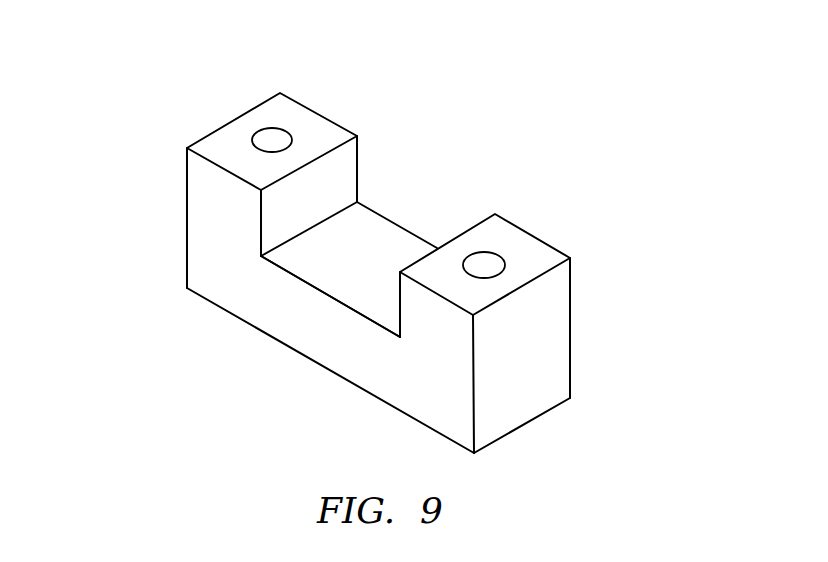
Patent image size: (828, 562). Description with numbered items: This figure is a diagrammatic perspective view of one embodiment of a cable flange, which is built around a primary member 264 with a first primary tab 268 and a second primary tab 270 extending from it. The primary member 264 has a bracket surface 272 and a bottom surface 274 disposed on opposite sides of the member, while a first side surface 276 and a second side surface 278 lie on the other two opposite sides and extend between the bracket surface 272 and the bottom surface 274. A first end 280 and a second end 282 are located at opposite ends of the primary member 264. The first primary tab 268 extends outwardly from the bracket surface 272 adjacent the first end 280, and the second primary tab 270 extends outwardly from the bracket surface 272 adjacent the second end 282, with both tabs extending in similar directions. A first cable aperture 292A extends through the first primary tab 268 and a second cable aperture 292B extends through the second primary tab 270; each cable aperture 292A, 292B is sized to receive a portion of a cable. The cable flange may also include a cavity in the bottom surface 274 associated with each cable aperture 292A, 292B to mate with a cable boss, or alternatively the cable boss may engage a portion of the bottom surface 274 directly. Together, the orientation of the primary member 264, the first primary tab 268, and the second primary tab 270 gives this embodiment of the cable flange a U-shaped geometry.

The primary member 264 is at (360, 348).
The first primary tab 268 is at (535, 308).
The second primary tab 270 is at (249, 167).
The bracket surface 272 is at (376, 278).
The bottom surface 274 is at (260, 332).
The first side surface 276 is at (215, 232).
The second side surface 278 is at (320, 112).
The first end 280 is at (547, 341).
The second end 282 is at (187, 198).
The first cable aperture 292A is at (488, 258).
The second cable aperture 292B is at (268, 137).